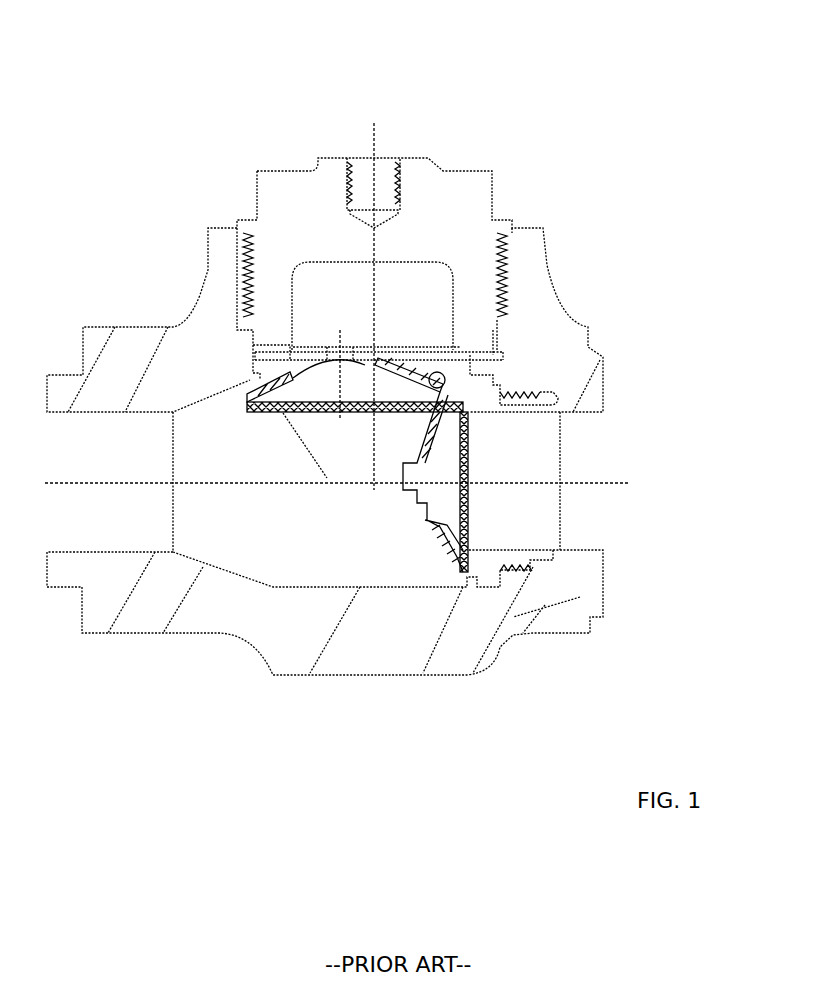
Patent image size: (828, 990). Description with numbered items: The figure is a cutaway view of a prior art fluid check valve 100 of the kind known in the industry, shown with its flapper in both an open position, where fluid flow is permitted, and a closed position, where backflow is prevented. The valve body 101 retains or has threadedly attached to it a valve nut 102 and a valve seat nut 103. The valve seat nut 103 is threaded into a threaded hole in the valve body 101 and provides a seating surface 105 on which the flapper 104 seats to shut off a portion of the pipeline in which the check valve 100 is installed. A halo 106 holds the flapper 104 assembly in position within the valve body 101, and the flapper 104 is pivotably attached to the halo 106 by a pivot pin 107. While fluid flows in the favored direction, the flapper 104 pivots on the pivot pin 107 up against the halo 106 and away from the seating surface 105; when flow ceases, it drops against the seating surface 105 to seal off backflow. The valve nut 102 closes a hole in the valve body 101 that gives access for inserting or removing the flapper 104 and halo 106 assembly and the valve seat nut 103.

The check valve 100 is at (332, 118).
The valve body 101 is at (140, 637).
The valve nut 102 is at (454, 172).
The valve seat nut 103 is at (483, 398).
The flapper 104 is at (318, 415).
The seating surface 105 is at (418, 632).
The halo 106 is at (420, 352).
The pivot pin 107 is at (462, 363).